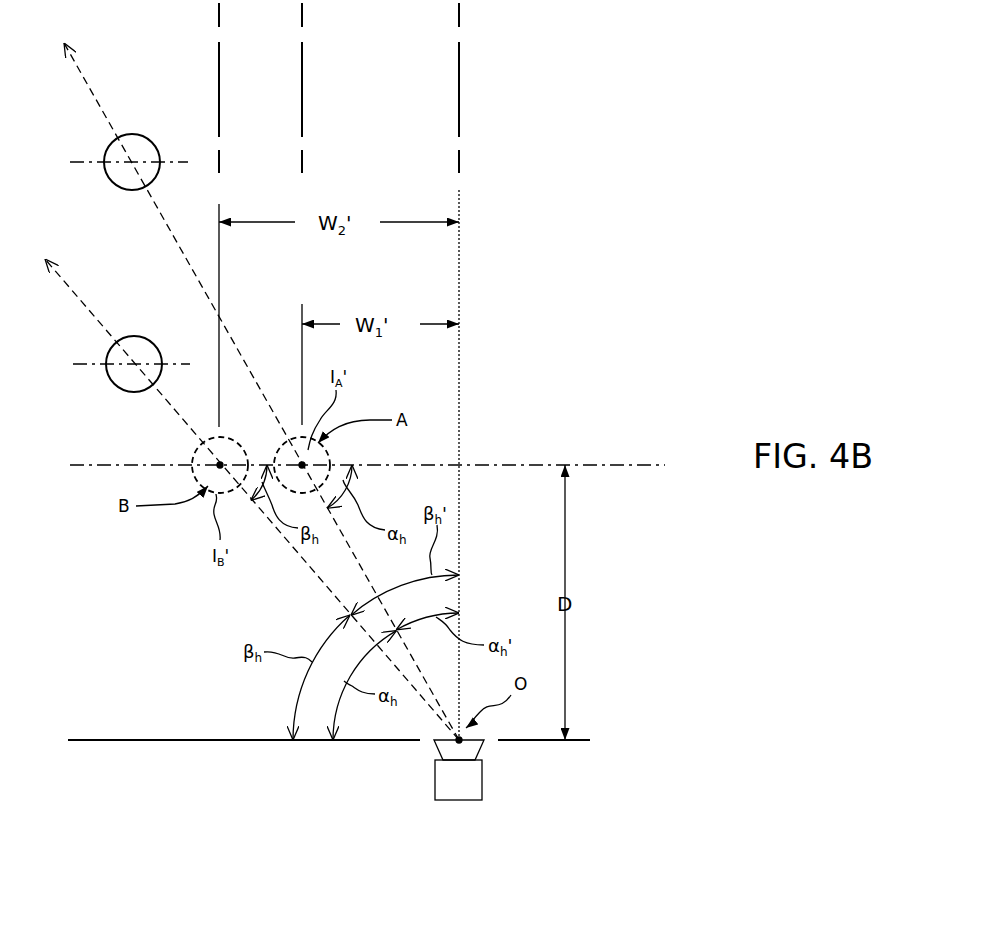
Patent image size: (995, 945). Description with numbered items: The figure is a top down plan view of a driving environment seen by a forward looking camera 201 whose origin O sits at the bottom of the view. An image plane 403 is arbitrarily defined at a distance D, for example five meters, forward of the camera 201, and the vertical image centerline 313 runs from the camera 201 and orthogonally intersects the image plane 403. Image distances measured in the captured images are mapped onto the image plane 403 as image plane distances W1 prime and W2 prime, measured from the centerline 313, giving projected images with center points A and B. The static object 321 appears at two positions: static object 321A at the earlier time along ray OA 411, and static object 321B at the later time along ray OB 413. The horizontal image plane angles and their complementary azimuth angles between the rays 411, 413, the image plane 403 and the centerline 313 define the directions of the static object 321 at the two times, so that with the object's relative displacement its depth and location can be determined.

The static object 321 is at (134, 218).
The static object at earlier time 321A is at (155, 141).
The static object at later time 321B is at (155, 343).
The ray OA 411 is at (242, 360).
The ray OB 413 is at (166, 403).
The vertical image centerline 313 is at (459, 266).
The image plane 403 is at (552, 462).
The camera 201 is at (435, 770).